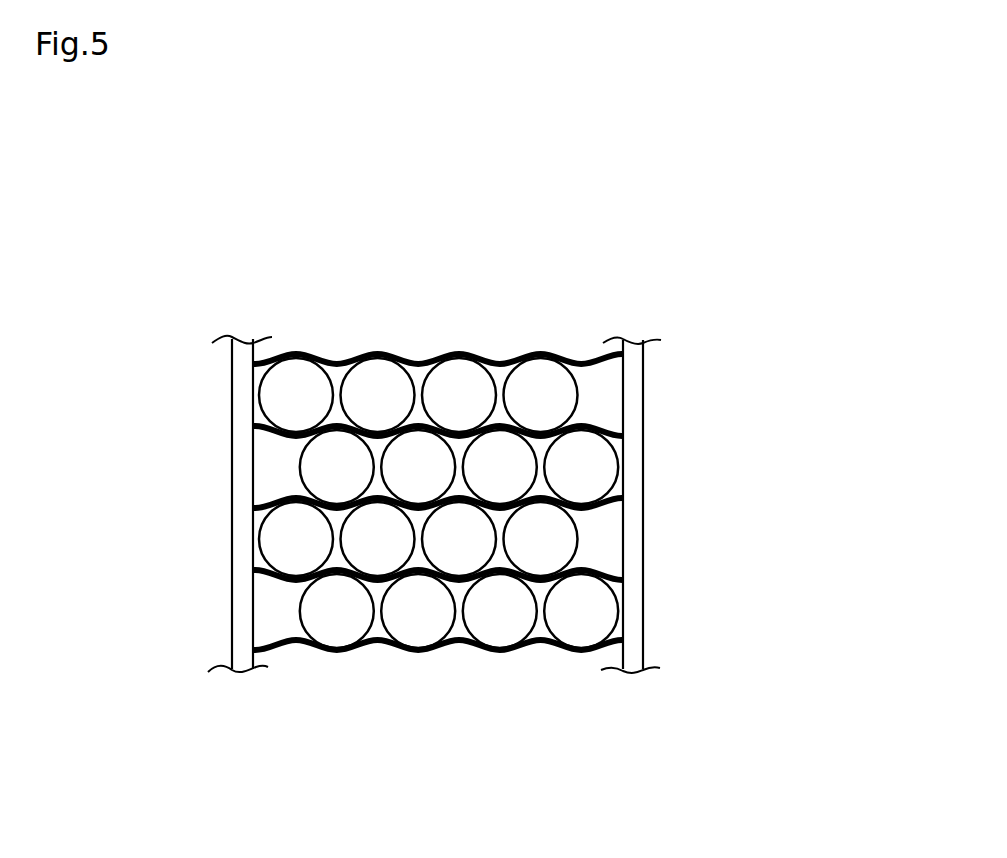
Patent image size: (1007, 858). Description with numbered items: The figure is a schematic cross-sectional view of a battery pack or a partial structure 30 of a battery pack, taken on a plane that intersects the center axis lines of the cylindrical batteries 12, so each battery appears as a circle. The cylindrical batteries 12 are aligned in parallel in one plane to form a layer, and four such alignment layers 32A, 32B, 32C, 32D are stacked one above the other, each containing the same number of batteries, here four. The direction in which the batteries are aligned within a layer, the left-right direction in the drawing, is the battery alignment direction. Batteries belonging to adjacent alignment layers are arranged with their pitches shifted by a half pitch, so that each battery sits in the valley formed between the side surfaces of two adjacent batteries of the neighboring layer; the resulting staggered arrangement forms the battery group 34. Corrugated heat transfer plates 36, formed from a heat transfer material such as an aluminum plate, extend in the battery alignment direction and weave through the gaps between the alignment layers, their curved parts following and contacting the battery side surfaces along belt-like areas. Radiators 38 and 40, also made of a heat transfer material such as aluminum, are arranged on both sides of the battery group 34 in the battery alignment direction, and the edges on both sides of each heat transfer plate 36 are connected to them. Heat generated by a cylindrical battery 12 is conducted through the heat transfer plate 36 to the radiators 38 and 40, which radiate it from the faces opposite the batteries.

The cylindrical battery 12 is at (268, 396).
The partial structure of the battery pack 30 is at (662, 245).
The alignment layer 32A is at (703, 613).
The alignment layer 32B is at (703, 540).
The alignment layer 32C is at (703, 468).
The alignment layer 32D is at (703, 397).
The battery group 34 is at (472, 322).
The heat transfer plate 36 is at (336, 358).
The radiator 38 is at (238, 372).
The radiator 40 is at (635, 388).